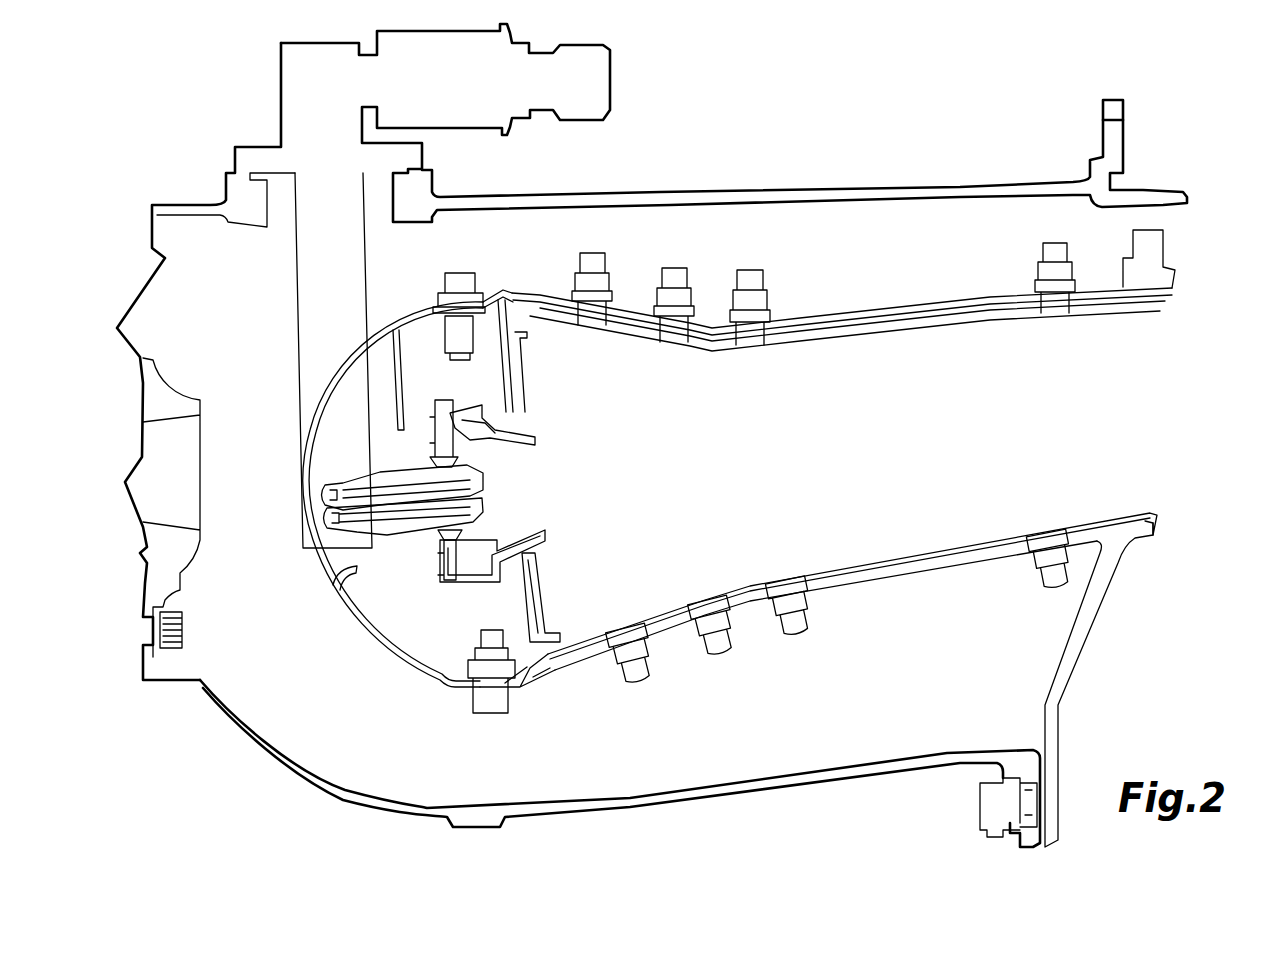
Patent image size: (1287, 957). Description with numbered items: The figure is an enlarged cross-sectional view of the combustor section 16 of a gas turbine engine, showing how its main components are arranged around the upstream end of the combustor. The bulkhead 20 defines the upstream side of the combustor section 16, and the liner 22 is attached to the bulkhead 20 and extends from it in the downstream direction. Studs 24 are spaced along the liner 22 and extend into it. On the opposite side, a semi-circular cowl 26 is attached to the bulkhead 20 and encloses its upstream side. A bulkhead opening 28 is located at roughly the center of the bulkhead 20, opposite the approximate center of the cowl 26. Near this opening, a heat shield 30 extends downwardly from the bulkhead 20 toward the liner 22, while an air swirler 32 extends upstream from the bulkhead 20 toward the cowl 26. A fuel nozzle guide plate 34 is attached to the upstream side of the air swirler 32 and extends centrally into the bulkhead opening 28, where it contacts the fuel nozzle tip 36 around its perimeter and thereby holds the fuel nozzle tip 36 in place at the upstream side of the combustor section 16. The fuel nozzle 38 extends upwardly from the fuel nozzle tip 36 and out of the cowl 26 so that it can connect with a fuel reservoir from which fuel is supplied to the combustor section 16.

The combustor section 16 is at (777, 153).
The bulkhead 20 is at (557, 667).
The liner 22 is at (876, 583).
The studs 24 is at (755, 275).
The cowl 26 is at (395, 653).
The bulkhead opening 28 is at (538, 467).
The heat shield 30 is at (550, 585).
The air swirler 32 is at (490, 430).
The fuel nozzle guide plate 34 is at (480, 535).
The fuel nozzle tip 36 is at (445, 492).
The fuel nozzle 38 is at (323, 268).